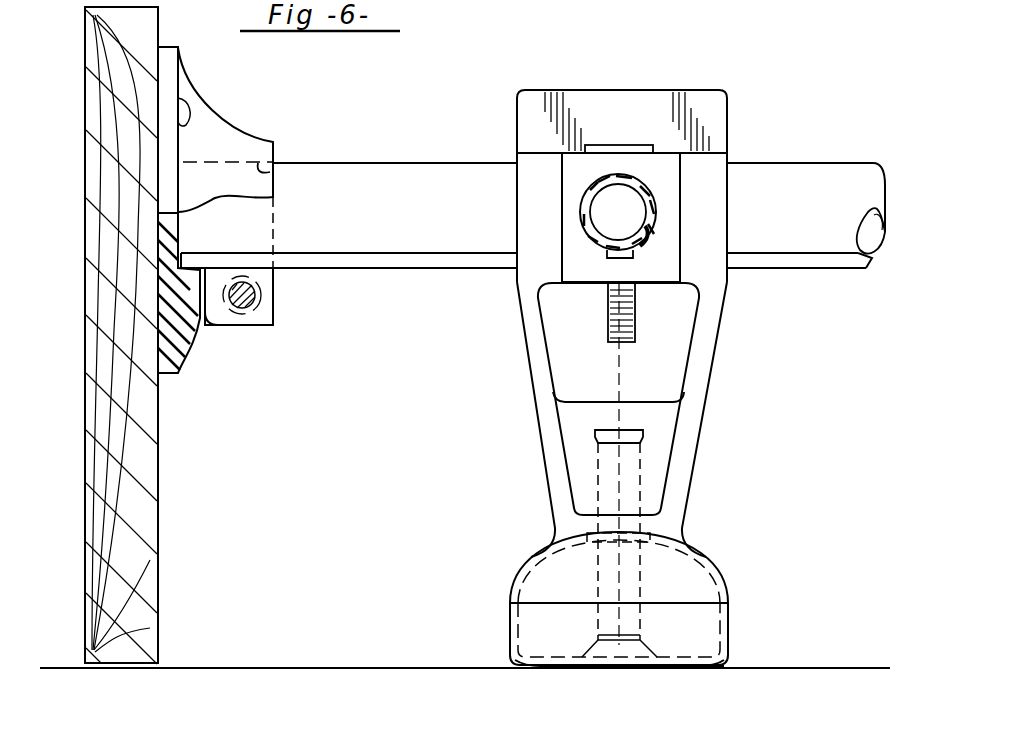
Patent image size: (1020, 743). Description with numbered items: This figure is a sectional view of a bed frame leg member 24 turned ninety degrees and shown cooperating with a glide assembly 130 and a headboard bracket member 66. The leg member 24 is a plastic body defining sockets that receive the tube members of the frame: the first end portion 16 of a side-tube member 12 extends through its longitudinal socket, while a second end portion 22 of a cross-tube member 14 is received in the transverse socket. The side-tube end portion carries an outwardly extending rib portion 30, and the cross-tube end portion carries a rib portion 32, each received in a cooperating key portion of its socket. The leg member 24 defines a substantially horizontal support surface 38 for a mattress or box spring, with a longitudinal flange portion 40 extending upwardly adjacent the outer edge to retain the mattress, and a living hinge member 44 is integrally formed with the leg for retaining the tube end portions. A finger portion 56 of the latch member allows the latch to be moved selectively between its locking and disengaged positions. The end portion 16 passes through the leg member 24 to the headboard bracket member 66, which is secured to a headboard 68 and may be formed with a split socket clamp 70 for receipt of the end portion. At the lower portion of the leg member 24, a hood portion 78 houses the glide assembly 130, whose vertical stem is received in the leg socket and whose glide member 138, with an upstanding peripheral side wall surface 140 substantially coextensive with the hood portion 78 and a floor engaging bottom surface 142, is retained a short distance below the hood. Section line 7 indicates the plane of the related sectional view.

The section line 7- 7 is at (662, 382).
The side-tube member 12 is at (803, 163).
The cross-tube member 14 is at (593, 239).
The first end portion 16 is at (383, 243).
The second end portion 22 is at (652, 216).
The leg member 24 is at (538, 421).
The rib portion 30 is at (488, 259).
The rib portion 32 is at (632, 258).
The support surface 38 is at (700, 151).
The longitudinal flange portion 40 is at (705, 112).
The living hinge member 44 is at (632, 146).
The finger portion 56 is at (627, 320).
The headboard bracket member 66 is at (243, 148).
The headboard 68 is at (150, 490).
The split socket clamp 70 is at (286, 165).
The hood portion 78 is at (700, 548).
The glide assembly 130 is at (506, 612).
The glide member 138 is at (515, 662).
The peripheral side wall surface 140 is at (730, 620).
The floor engaging bottom surface 142 is at (672, 670).